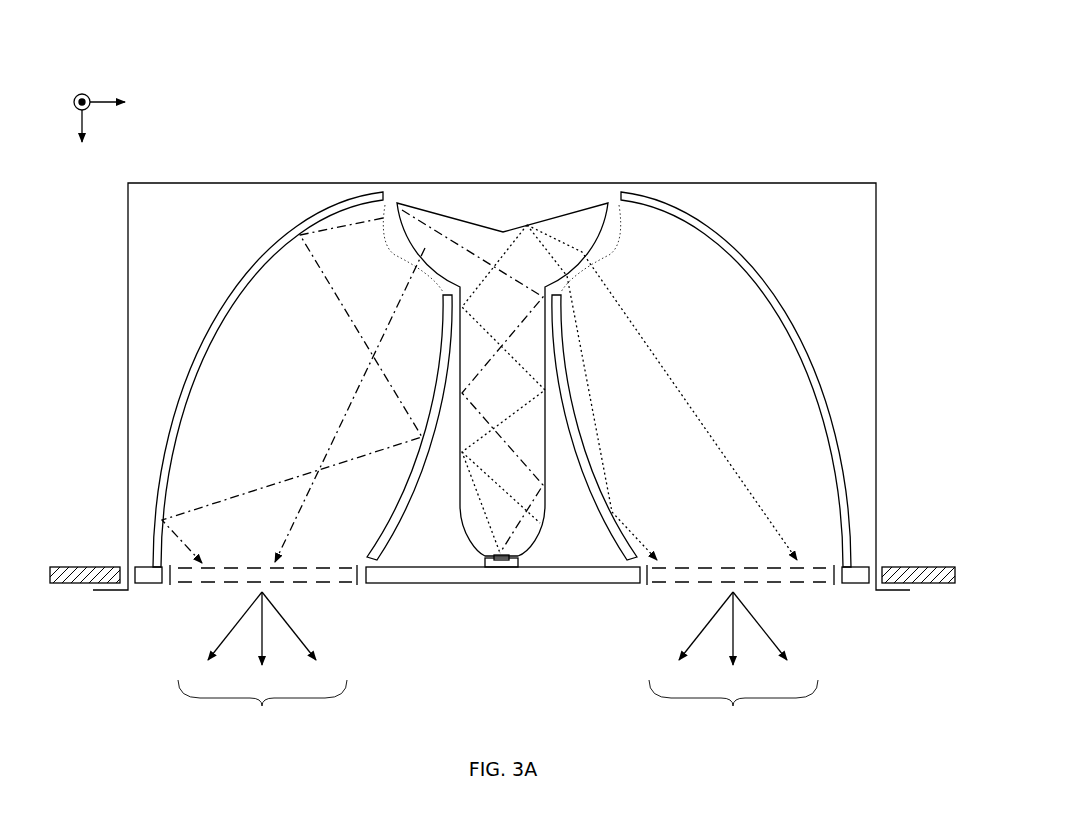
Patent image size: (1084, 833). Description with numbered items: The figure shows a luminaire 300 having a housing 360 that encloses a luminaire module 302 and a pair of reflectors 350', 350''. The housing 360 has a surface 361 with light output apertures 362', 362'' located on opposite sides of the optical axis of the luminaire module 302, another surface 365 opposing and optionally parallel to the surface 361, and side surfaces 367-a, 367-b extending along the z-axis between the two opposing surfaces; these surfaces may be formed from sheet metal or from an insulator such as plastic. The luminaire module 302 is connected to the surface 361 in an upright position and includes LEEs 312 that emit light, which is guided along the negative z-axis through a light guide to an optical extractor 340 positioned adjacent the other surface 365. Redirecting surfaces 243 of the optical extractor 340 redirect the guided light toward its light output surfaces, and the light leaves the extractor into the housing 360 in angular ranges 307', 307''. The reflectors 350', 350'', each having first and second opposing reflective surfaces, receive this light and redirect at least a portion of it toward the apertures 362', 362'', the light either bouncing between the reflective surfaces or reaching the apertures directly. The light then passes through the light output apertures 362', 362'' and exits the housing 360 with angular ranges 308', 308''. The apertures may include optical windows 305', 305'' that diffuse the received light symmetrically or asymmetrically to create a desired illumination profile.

The luminaire 300 is at (323, 58).
The redirecting surfaces 243 is at (467, 207).
The optical extractor 340 is at (580, 228).
The luminaire module 302 is at (543, 523).
The LEEs 312 is at (503, 548).
The housing 360 is at (817, 183).
The other surface 365 is at (202, 183).
The side surface 367-a is at (128, 278).
The side surface 367-b is at (877, 235).
The reflector 350' is at (302, 379).
The reflector 350'' is at (701, 379).
The angular range 307' is at (388, 248).
The angular range 307'' is at (617, 248).
The surface 361 is at (147, 585).
The optical window 305' is at (213, 634).
The optical window 305'' is at (798, 630).
The angular range 308' is at (262, 663).
The angular range 308'' is at (733, 663).
The light output aperture 362' is at (352, 386).
The light output aperture 362'' is at (629, 392).